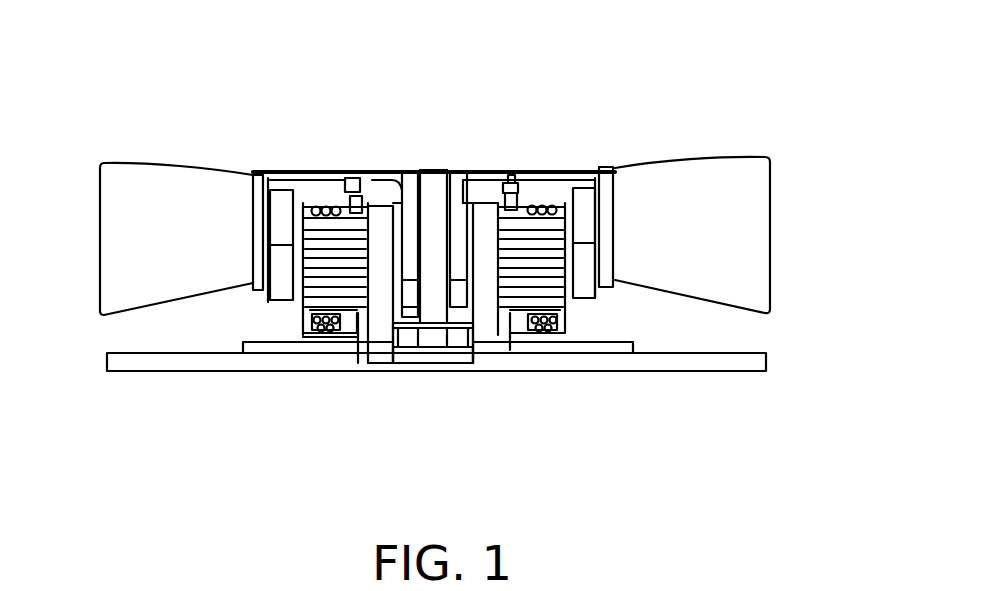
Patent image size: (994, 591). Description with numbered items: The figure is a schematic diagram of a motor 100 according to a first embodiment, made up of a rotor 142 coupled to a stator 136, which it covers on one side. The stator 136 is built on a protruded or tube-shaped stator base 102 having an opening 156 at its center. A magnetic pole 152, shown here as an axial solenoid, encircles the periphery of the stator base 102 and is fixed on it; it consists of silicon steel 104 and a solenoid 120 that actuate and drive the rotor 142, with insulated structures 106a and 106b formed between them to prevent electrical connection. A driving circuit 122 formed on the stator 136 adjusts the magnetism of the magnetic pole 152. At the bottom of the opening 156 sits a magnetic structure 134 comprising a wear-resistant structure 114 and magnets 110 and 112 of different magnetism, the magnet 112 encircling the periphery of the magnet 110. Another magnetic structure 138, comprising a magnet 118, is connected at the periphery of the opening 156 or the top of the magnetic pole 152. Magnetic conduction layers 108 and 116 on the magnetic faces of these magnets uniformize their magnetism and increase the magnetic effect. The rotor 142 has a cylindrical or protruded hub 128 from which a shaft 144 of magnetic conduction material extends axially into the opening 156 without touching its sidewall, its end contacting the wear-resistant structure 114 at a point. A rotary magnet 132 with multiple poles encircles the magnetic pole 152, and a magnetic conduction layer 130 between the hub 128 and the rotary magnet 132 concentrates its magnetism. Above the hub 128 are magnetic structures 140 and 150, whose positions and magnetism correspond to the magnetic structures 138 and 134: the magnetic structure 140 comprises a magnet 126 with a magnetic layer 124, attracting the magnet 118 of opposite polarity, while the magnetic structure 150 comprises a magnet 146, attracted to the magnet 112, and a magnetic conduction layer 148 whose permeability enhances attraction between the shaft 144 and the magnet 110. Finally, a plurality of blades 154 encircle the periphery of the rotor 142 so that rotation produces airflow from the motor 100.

The motor 100 is at (90, 21).
The stator base 102 is at (147, 372).
The silicon steel 104 is at (350, 300).
The insulated structure 106a is at (290, 212).
The insulated structure 106b is at (303, 323).
The magnetic conduction layer 108 is at (433, 352).
The magnet 110 is at (441, 335).
The magnet 112 is at (457, 300).
The wear-resistant structure 114 is at (415, 347).
The magnetic conduction layer 116 is at (522, 202).
The magnet 118 is at (506, 184).
The solenoid 120 is at (322, 326).
The driving circuit 122 is at (250, 353).
The magnetic layer 124 is at (363, 196).
The magnet 126 is at (347, 178).
The hub 128 is at (460, 182).
The magnetic conduction layer 130 is at (600, 178).
The rotary magnet 132 is at (587, 217).
The magnetic structure 134 is at (517, 483).
The stator 136 is at (291, 178).
The magnetic structure 138 is at (502, 58).
The magnetic structure 140 is at (305, 110).
The rotor 142 is at (246, 167).
The shaft 144 is at (432, 178).
The magnet 146 is at (470, 283).
The magnetic conduction layer 148 is at (460, 300).
The magnetic structure 150 is at (550, 483).
The magnetic pole 152 is at (390, 428).
The blades 154 is at (682, 165).
The opening 156 is at (410, 172).